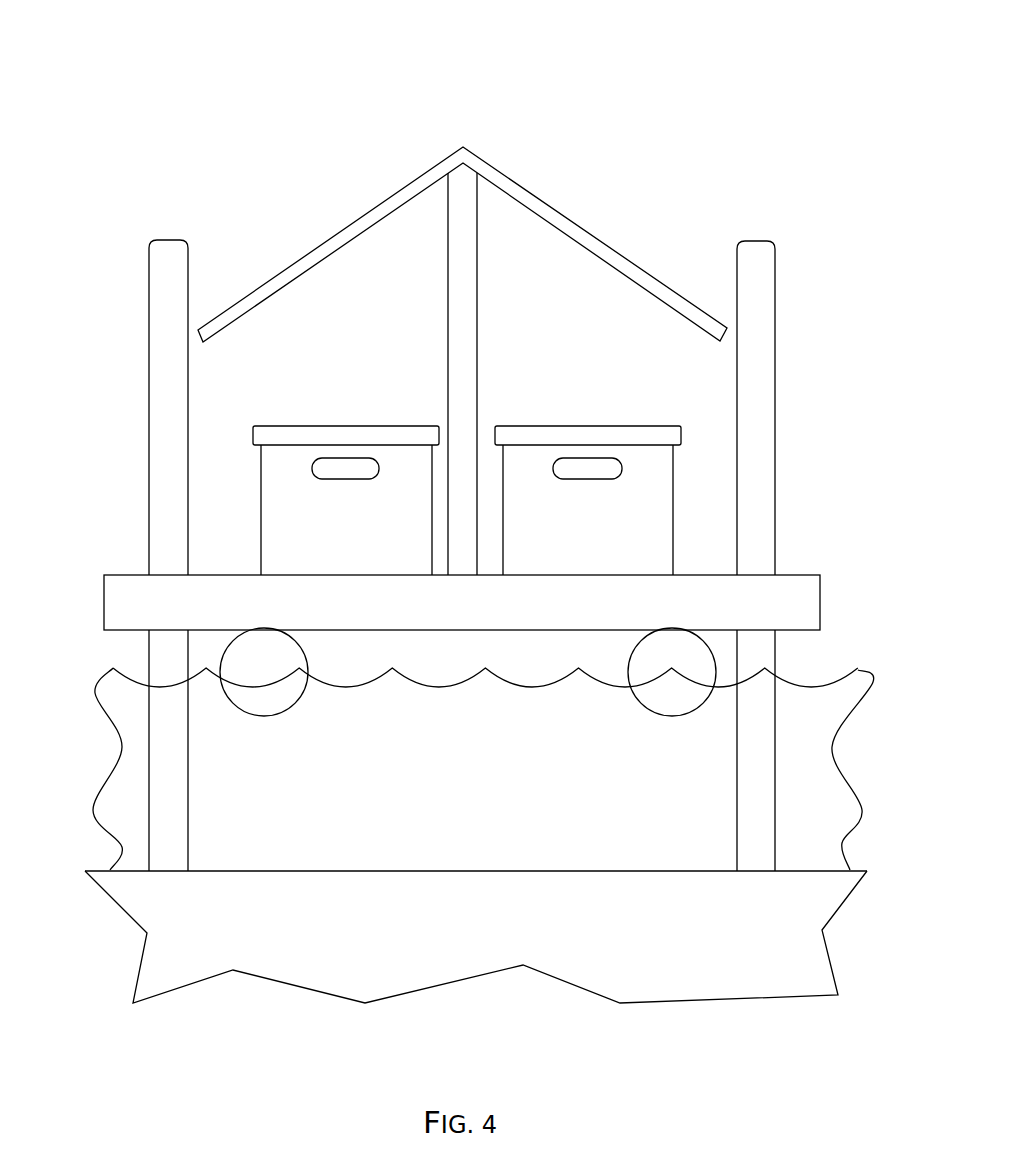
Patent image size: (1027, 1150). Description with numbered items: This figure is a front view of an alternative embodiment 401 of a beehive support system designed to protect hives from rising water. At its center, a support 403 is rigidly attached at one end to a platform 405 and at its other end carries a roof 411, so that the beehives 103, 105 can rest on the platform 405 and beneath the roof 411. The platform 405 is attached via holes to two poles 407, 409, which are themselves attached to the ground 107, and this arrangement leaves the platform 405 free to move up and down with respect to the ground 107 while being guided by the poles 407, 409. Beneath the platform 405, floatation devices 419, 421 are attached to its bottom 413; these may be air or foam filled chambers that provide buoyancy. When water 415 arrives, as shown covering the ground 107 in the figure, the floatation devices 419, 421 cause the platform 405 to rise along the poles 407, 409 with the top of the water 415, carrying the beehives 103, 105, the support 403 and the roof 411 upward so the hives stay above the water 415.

The embodiment 401 is at (117, 55).
The lower hive 103 is at (261, 500).
The upper hive 105 is at (673, 485).
The ground 107 is at (855, 890).
The support 403 is at (477, 358).
The platform 405 is at (800, 575).
The pole 407 is at (149, 300).
The pole 409 is at (775, 298).
The roof 411 is at (347, 225).
The bottom 413 is at (127, 634).
The water 415 is at (850, 668).
The floatation device 419 is at (262, 716).
The floatation device 421 is at (672, 716).